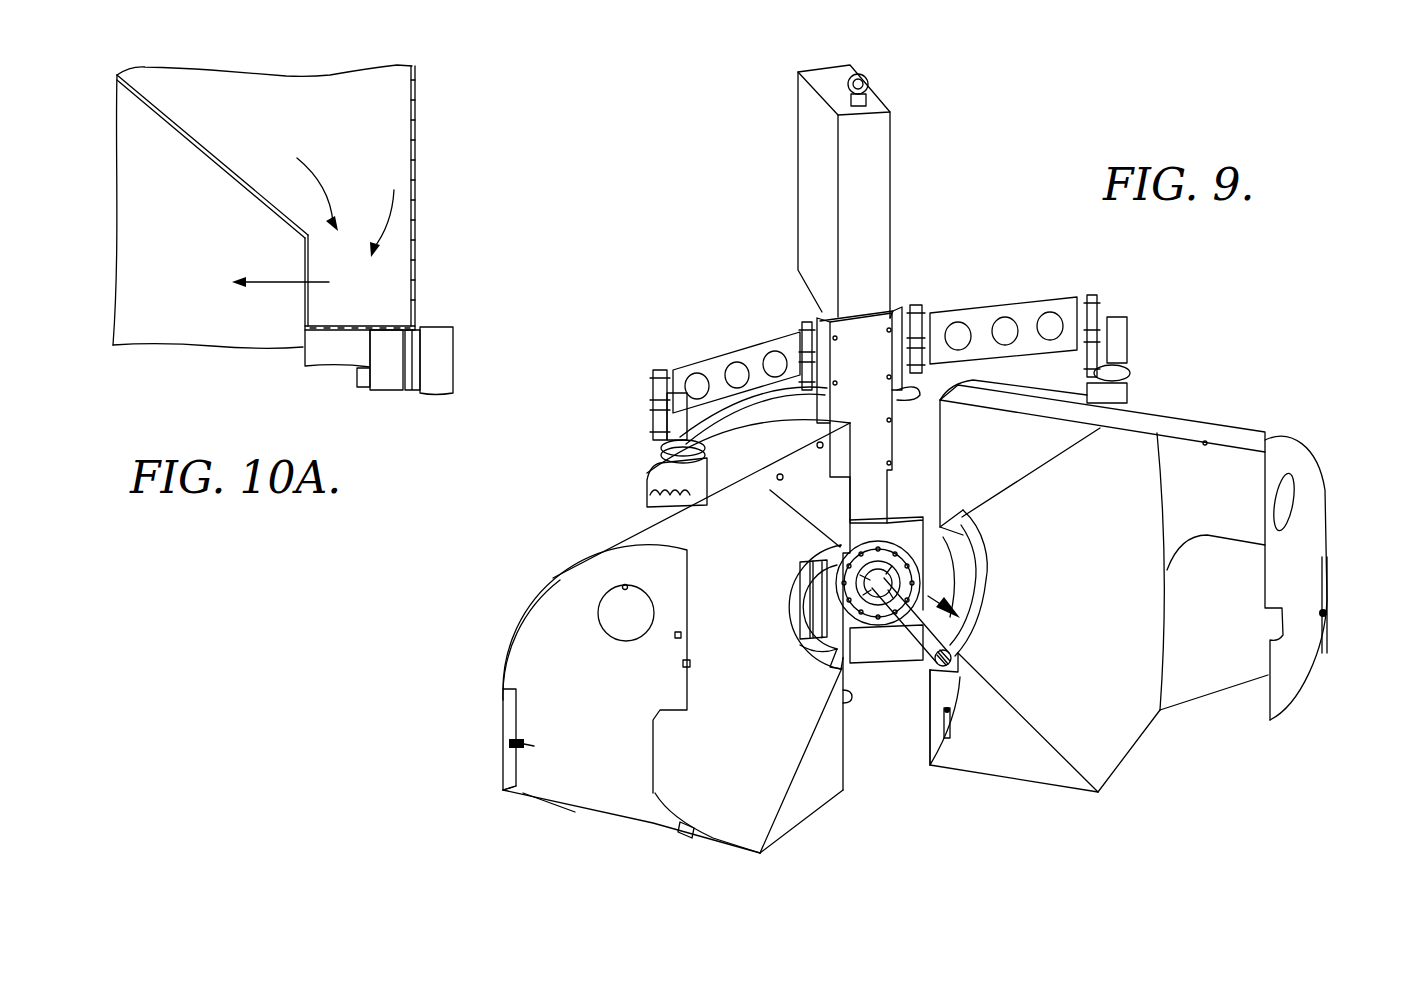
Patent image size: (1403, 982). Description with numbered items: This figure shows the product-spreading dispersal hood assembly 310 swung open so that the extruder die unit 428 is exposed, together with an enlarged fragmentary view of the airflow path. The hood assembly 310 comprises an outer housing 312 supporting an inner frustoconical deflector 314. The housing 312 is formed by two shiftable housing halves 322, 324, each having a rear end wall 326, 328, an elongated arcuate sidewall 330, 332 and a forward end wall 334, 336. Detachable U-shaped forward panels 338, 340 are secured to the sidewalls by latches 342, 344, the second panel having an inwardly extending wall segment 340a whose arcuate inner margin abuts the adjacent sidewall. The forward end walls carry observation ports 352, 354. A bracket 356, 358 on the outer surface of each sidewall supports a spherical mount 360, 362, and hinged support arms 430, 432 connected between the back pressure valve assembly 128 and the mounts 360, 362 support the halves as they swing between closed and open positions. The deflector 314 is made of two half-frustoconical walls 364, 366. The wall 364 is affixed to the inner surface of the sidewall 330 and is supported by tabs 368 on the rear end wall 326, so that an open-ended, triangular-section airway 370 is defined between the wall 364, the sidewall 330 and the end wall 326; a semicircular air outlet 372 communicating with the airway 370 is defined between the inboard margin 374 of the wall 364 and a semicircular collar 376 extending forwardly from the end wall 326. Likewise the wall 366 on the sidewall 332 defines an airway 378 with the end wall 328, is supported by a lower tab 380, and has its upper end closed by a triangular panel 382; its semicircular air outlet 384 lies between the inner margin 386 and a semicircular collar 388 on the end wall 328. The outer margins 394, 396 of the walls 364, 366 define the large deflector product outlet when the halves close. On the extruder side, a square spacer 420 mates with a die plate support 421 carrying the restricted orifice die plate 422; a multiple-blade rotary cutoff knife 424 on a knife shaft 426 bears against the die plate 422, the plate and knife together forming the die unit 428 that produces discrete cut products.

In FIG. 9, the back pressure valve assembly 128 is at (907, 180).
In FIG. 9, the product-spreading dispersal hood assembly 310 is at (1223, 288).
In FIG. 9, the outer housing 312 is at (444, 733).
In FIG. 9, the frustoconical deflector 314 is at (1102, 825).
In FIG. 9, the housing half 322 is at (536, 562).
In FIG. 9, the housing half 324 is at (1241, 414).
In FIG. 10A, the rear end wall 326 is at (414, 149).
In FIG. 9, the rear end wall 326 is at (840, 748).
In FIG. 9, the rear end wall 328 is at (938, 692).
In FIG. 10A, the arcuate sidewall 330 is at (284, 86).
In FIG. 9, the arcuate sidewall 330 is at (615, 538).
In FIG. 9, the arcuate sidewall 332 is at (1265, 432).
In FIG. 9, the forward end wall 334 is at (533, 654).
In FIG. 9, the forward end wall 336 is at (1310, 537).
In FIG. 9, the forward panel 338 is at (503, 773).
In FIG. 9, the forward panel 340 is at (1230, 683).
In FIG. 9, the inwardly extending wall segment 340a is at (1143, 725).
In FIG. 9, the latch 342 is at (530, 743).
In FIG. 9, the latch 344 is at (1322, 615).
In FIG. 9, the observation port 352 is at (620, 625).
In FIG. 9, the observation port 354 is at (1293, 492).
In FIG. 9, the bracket 356 is at (647, 485).
In FIG. 9, the bracket 358 is at (1152, 397).
In FIG. 9, the spherical mount 360 is at (663, 457).
In FIG. 9, the spherical mount 362 is at (1122, 363).
In FIG. 10A, the half-frustoconical wall 364 is at (212, 162).
In FIG. 9, the half-frustoconical wall 364 is at (745, 828).
In FIG. 9, the half-frustoconical wall 366 is at (1085, 760).
In FIG. 9, the tabs 368 is at (838, 533).
In FIG. 9, the airway 370 is at (810, 793).
In FIG. 10A, the semicircular air outlet 372 is at (322, 268).
In FIG. 9, the semicircular air outlet 372 is at (810, 670).
In FIG. 9, the inboard margin 374 is at (790, 657).
In FIG. 10A, the semicircular collar 376 is at (330, 350).
In FIG. 9, the semicircular collar 376 is at (793, 617).
In FIG. 9, the airway 378 is at (1017, 753).
In FIG. 9, the lower tab 380 is at (960, 675).
In FIG. 9, the triangular panel 382 is at (1048, 433).
In FIG. 9, the semicircular air outlet 384 is at (957, 645).
In FIG. 9, the inner margin 386 is at (982, 523).
In FIG. 9, the semicircular collar 388 is at (967, 597).
In FIG. 9, the outer margin 394 is at (672, 808).
In FIG. 9, the outer margin 396 is at (1147, 677).
In FIG. 10A, the square spacer 420 is at (442, 355).
In FIG. 10A, the die plate support 421 is at (387, 383).
In FIG. 9, the die plate support 421 is at (897, 520).
In FIG. 10A, the restricted orifice die plate 422 is at (357, 387).
In FIG. 9, the restricted orifice die plate 422 is at (800, 573).
In FIG. 9, the multiple-blade rotary cutoff knife 424 is at (922, 553).
In FIG. 9, the knife shaft 426 is at (923, 633).
In FIG. 9, the die unit 428 is at (940, 627).
In FIG. 9, the hinged support arm 430 is at (750, 357).
In FIG. 9, the hinged support arm 432 is at (1027, 313).